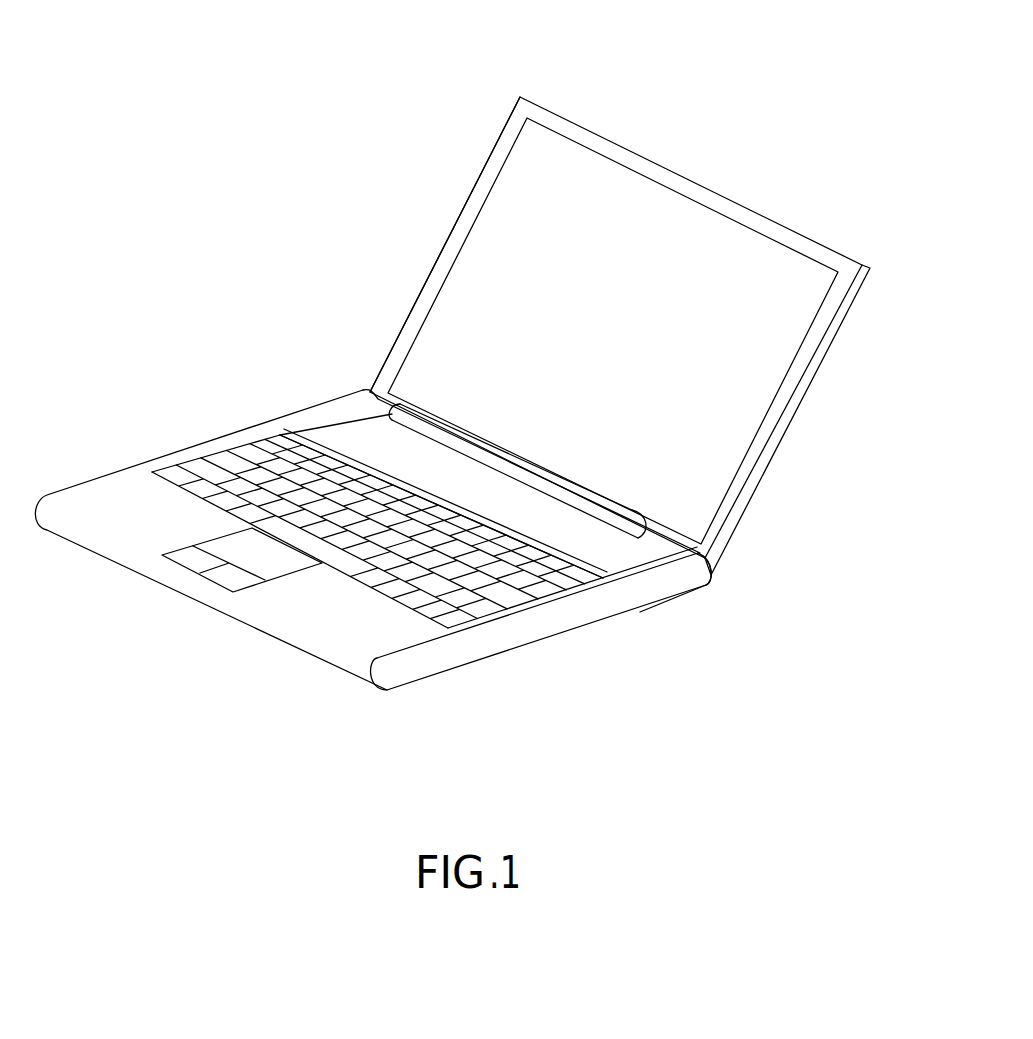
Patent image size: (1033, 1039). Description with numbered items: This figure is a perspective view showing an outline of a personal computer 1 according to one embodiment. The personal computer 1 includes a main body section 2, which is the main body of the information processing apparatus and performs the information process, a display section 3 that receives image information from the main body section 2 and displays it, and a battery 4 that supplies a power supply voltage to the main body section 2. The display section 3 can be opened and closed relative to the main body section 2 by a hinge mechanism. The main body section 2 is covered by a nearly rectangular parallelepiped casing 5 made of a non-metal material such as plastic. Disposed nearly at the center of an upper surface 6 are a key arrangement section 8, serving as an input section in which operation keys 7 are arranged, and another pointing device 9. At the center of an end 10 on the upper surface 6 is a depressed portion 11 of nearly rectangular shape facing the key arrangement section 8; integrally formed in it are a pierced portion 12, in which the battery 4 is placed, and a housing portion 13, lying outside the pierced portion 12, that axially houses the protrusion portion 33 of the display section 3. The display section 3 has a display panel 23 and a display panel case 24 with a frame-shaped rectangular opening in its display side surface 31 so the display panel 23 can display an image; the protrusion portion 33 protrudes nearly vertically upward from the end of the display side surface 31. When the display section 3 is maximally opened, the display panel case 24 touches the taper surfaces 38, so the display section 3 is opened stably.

The personal computer 1 is at (351, 80).
The main body section 2 is at (192, 378).
The display section 3 is at (682, 134).
The battery 4 is at (360, 416).
The casing 5 is at (407, 640).
The upper surface 6 is at (122, 488).
The operation keys 7 is at (557, 583).
The key arrangement section 8 is at (235, 430).
The pointing device 9 is at (275, 570).
The end 10 is at (683, 596).
The depressed portion 11 is at (393, 408).
The pierced portion 12 is at (333, 430).
The housing portion 13 is at (640, 527).
The display panel 23 is at (498, 207).
The display panel case 24 is at (542, 104).
The display side surface 31 is at (453, 262).
The protrusion portion 33 is at (548, 487).
The taper surfaces 38 is at (713, 582).